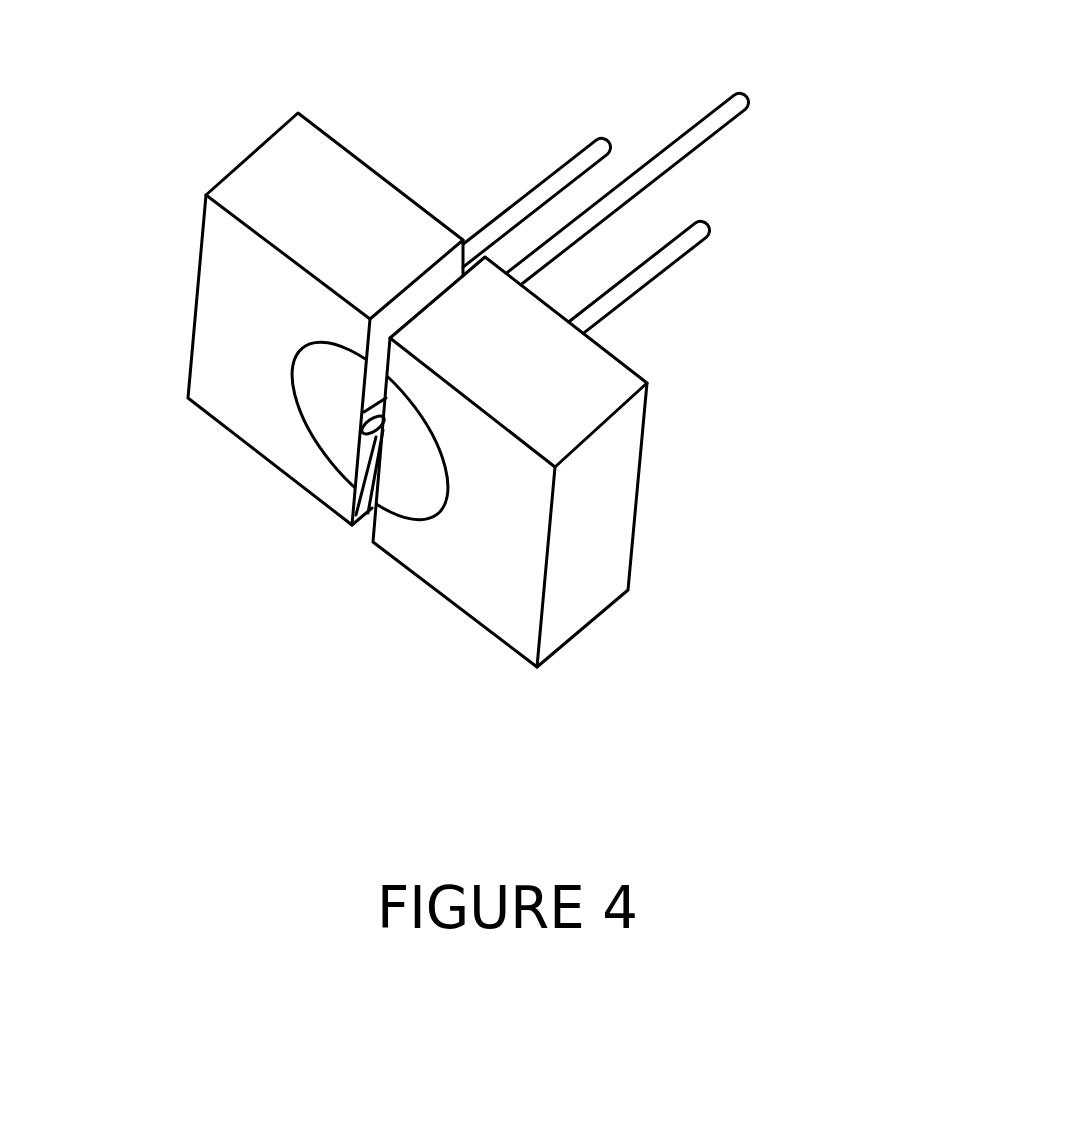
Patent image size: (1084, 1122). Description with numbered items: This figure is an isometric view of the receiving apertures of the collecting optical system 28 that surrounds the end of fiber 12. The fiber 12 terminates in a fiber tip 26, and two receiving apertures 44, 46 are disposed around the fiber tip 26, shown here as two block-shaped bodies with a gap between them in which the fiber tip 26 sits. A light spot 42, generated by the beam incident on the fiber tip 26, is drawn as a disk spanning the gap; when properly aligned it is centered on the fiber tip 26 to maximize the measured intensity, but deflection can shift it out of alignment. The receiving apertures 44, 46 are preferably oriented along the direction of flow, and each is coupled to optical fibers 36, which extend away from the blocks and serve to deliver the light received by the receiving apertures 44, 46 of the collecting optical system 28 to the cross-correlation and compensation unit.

The fiber 12 is at (732, 133).
The fiber tip 26 is at (352, 522).
The collecting optical system 28 is at (496, 396).
The optical fibers 36 is at (573, 158).
The light spot 42 is at (420, 517).
The receiving aperture 44 is at (204, 200).
The receiving aperture 46 is at (547, 657).